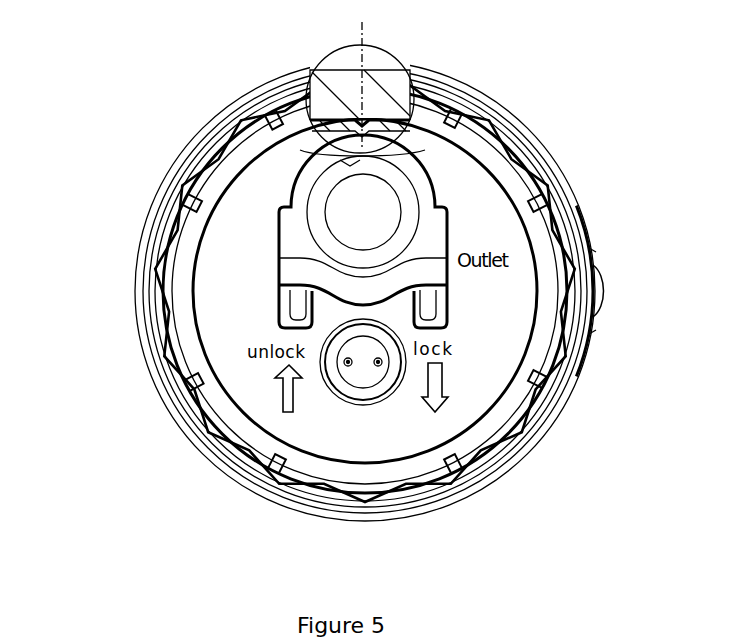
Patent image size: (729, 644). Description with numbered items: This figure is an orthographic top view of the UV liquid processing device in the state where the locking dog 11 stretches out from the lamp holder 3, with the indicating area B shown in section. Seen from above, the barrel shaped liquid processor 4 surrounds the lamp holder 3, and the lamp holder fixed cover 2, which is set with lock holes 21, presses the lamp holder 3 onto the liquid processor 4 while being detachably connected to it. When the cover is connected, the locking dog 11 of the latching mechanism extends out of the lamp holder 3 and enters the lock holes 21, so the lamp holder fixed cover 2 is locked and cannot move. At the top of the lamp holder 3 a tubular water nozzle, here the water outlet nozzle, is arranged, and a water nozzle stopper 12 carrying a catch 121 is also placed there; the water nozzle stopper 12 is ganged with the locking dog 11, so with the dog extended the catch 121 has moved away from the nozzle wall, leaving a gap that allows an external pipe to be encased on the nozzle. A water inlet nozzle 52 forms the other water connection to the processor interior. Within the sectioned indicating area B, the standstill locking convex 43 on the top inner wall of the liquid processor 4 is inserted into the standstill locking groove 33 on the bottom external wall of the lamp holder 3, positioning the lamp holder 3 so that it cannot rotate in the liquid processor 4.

The lamp holder fixed cover 2 is at (369, 291).
The lock holes 21 is at (335, 472).
The catch 121 is at (363, 293).
The locking dog 11 is at (362, 473).
The indicating area B is at (400, 58).
The liquid processor 4 is at (341, 93).
The standstill locking convex 43 is at (365, 48).
The lamp holder 3 is at (385, 127).
The standstill locking groove 33 is at (350, 163).
The water nozzle stopper 12 is at (268, 286).
The water inlet nozzle 52 is at (363, 362).